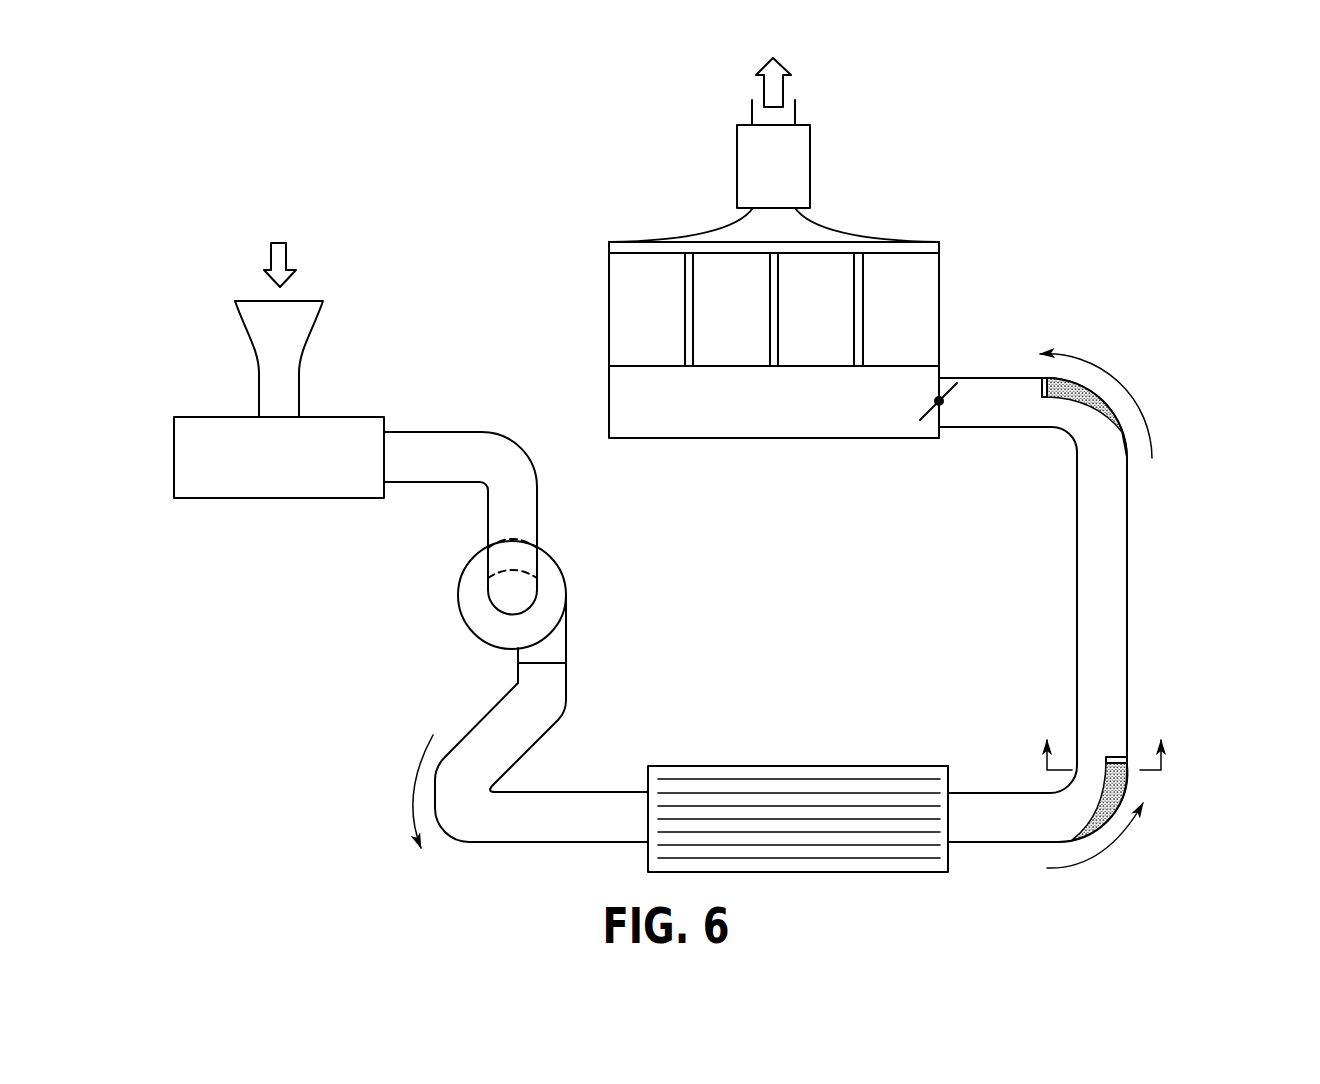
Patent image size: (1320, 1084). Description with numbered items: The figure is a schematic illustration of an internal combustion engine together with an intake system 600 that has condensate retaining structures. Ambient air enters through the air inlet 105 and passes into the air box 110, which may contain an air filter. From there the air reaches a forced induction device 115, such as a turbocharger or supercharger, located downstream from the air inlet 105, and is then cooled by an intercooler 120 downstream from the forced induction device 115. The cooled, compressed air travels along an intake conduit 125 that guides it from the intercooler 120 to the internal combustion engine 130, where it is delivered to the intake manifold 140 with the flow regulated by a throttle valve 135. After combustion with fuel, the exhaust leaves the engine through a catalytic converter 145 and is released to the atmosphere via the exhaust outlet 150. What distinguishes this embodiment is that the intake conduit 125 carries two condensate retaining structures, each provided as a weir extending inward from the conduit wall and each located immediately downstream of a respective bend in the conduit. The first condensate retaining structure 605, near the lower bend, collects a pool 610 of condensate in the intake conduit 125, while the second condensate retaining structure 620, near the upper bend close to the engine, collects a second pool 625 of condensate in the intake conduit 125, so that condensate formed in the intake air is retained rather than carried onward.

The air inlet 105 is at (291, 327).
The air box 110 is at (275, 470).
The forced induction device 115 is at (473, 593).
The intercooler 120 is at (806, 785).
The intake conduit 125 is at (1104, 591).
The internal combustion engine 130 is at (958, 281).
The throttle valve 135 is at (910, 412).
The intake manifold 140 is at (797, 418).
The catalytic converter 145 is at (788, 166).
The exhaust outlet 150 is at (805, 79).
The intake system 600 is at (263, 675).
The first condensate retaining structure 605 is at (1118, 757).
The pool 610 is at (1125, 785).
The second condensate retaining structure 620 is at (1040, 387).
The second pool 625 is at (1077, 395).